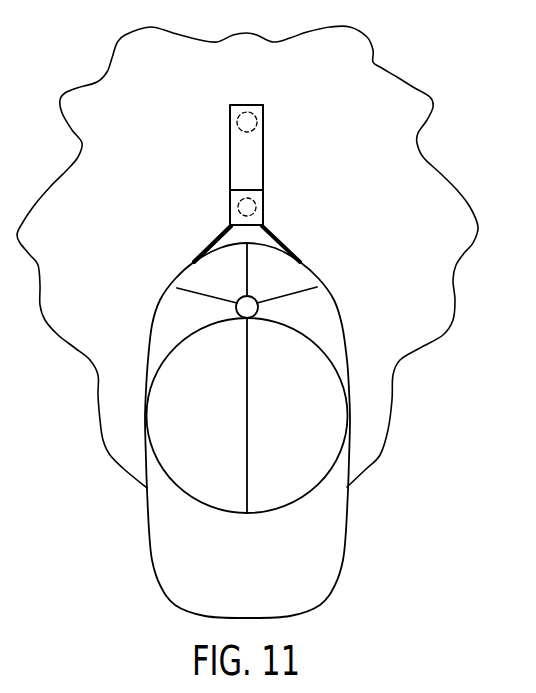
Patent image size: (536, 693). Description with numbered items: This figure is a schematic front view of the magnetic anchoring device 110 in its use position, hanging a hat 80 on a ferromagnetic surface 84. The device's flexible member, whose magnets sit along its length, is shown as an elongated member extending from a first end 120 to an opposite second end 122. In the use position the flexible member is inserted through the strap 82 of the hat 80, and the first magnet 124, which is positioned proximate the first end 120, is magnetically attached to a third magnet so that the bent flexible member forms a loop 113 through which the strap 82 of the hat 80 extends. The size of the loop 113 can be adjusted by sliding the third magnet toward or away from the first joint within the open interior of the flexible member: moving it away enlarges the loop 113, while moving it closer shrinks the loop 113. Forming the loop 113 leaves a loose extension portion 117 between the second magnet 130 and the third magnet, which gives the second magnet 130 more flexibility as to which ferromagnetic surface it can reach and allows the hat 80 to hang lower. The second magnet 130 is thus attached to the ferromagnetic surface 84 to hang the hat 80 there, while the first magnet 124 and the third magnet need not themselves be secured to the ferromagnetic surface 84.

The hat 80 is at (376, 307).
The strap 82 is at (283, 245).
The ferromagnetic surface 84 is at (373, 64).
The magnetic anchoring device 110 is at (206, 139).
The loop 113 is at (206, 231).
The extension portion 117 is at (228, 183).
The first end 120 is at (246, 190).
The second end 122 is at (247, 105).
The first magnet 124 is at (257, 207).
The second magnet 130 is at (258, 122).